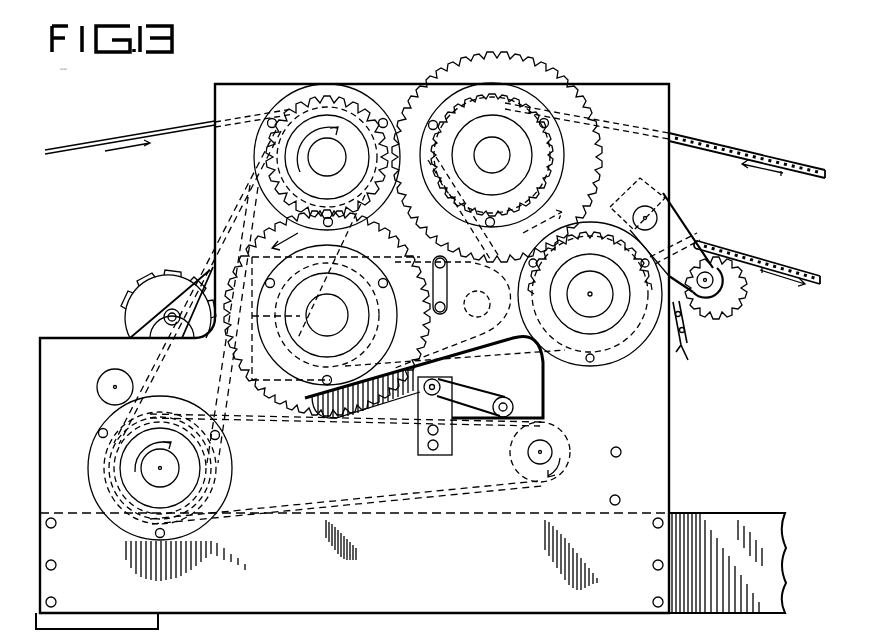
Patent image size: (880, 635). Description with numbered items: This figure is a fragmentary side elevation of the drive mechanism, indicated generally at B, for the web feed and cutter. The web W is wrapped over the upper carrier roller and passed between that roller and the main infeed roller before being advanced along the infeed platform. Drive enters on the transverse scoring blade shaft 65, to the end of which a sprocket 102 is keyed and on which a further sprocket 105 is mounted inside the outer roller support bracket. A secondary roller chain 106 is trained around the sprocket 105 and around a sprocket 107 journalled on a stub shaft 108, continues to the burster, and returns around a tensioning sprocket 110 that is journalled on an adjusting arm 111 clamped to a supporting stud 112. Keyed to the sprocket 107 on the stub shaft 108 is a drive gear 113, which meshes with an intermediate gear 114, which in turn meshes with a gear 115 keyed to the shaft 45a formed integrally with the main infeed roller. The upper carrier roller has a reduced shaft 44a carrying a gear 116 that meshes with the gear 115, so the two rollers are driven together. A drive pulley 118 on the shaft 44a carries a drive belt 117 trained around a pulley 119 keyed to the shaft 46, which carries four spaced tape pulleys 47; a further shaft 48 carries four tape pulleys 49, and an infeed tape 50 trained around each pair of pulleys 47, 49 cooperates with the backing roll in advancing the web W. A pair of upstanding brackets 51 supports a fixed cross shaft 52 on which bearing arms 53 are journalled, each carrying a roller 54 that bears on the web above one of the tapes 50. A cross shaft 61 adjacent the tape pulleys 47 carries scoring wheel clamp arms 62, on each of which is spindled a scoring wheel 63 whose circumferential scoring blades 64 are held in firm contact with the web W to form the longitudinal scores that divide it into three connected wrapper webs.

The web W is at (102, 133).
The machine frame assembly B is at (630, 72).
The reduced shaft 44a is at (327, 160).
The shaft 45a is at (344, 324).
The shaft 46 is at (152, 476).
The tape pulleys 47 is at (112, 456).
The shaft 48 is at (528, 452).
The tape pulleys 49 is at (556, 430).
The infeed tape 50 is at (470, 492).
The upstanding brackets 51 is at (418, 432).
The fixed cross shaft 52 is at (436, 380).
The bearing arms 53 is at (470, 395).
The roller 54 is at (506, 398).
The cross shaft 61 is at (106, 374).
The scoring wheel clamp arms 62 is at (122, 330).
The scoring wheel 63 is at (150, 285).
The scoring blades 64 is at (186, 270).
The transverse scoring blade shaft 65 is at (588, 315).
The sprocket 102 is at (684, 342).
The sprocket 105 is at (604, 350).
The secondary roller chain 106 is at (750, 150).
The sprocket 107 is at (458, 112).
The stub shaft 108 is at (492, 150).
The tensioning sprocket 110 is at (722, 308).
The adjusting arm 111 is at (700, 240).
The supporting stud 112 is at (655, 214).
The drive gear 113 is at (537, 63).
The intermediate gear 114 is at (484, 347).
The gear 115 is at (350, 420).
The gear 116 is at (305, 96).
The drive belt 117 is at (238, 430).
The drive pulley 118 is at (340, 115).
The pulley 119 is at (190, 474).